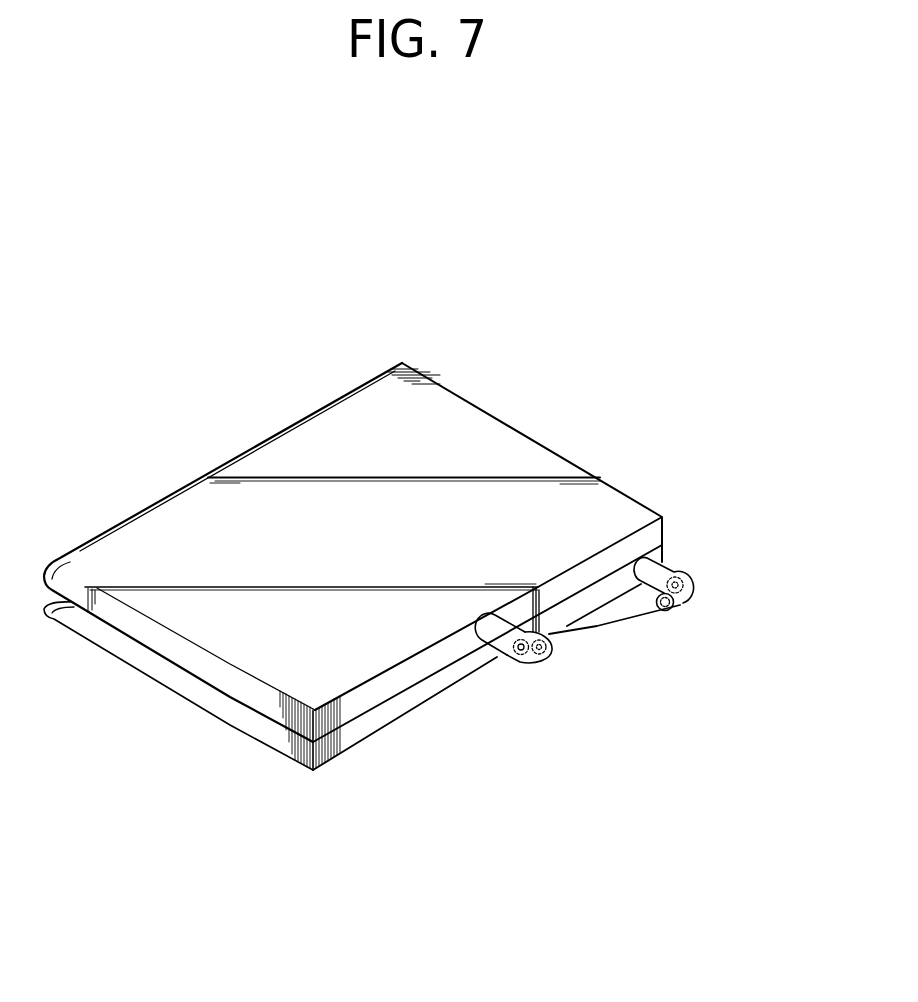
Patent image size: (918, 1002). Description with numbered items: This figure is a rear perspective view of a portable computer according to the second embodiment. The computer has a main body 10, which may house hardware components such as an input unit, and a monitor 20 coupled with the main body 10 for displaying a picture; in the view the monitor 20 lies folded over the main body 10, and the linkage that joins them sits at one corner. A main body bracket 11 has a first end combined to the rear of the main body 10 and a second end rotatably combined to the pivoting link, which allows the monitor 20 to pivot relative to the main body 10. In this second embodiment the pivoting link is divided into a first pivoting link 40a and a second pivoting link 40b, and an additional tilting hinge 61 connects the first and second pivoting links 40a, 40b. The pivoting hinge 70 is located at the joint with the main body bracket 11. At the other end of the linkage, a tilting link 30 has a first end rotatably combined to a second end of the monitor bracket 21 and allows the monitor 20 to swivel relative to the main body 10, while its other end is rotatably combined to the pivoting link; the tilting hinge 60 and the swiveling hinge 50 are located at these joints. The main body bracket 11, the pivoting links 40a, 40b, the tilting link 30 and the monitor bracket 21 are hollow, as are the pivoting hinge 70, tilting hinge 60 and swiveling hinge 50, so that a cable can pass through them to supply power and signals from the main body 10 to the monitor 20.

The main body 10 is at (383, 733).
The monitor 20 is at (541, 448).
The main body bracket 11 is at (653, 568).
The monitor bracket 21 is at (497, 668).
The tilting link 30 is at (522, 668).
The first pivoting link 40a is at (686, 596).
The second pivoting link 40b is at (627, 630).
The swiveling hinge 50 is at (538, 662).
The tilting hinge 60 is at (553, 656).
The additional tilting hinge 61 is at (687, 609).
The pivoting hinge 70 is at (687, 578).